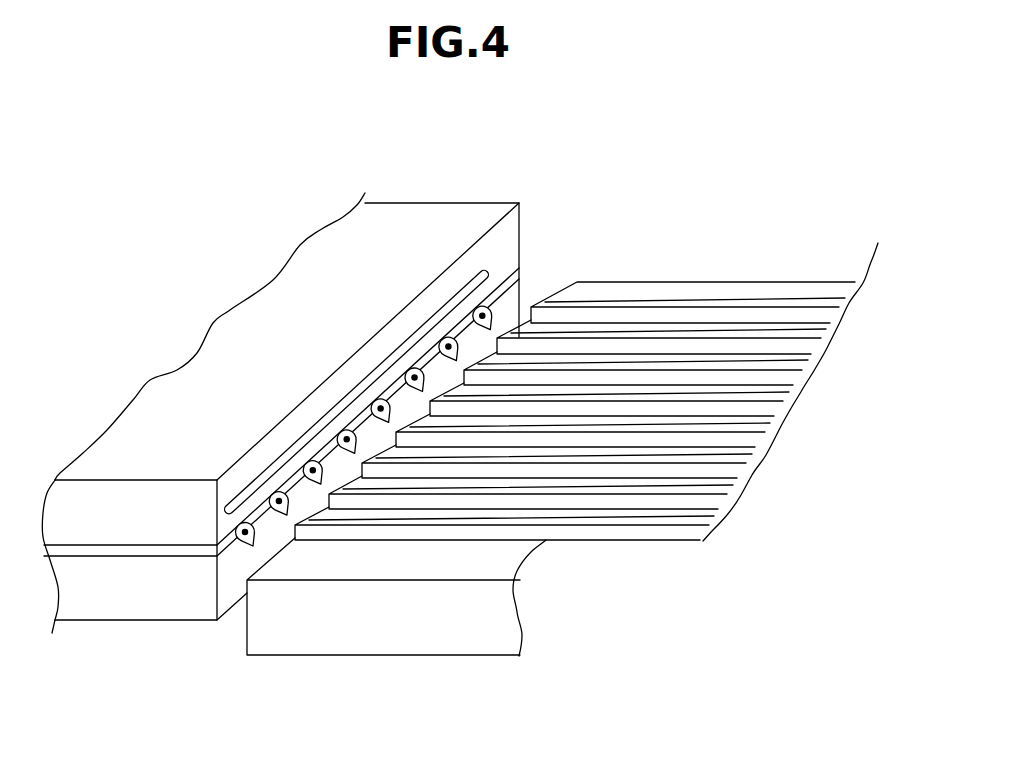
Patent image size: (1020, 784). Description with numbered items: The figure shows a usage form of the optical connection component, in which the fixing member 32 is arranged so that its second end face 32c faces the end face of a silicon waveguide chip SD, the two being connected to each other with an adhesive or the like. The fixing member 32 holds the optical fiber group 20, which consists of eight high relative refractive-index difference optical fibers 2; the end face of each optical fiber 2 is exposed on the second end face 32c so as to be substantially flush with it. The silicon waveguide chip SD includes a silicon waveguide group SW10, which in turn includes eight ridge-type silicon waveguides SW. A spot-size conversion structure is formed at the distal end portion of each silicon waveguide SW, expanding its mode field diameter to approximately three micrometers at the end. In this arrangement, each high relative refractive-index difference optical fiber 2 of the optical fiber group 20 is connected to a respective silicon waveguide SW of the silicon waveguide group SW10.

The high relative refractive-index difference optical fiber 2 is at (245, 543).
The optical fiber group 20 is at (349, 396).
The fixing member 32 is at (313, 416).
The second end face 32c is at (530, 229).
The silicon waveguide SW is at (597, 316).
The silicon waveguide group SW10 is at (412, 577).
The silicon waveguide chip SD is at (562, 433).